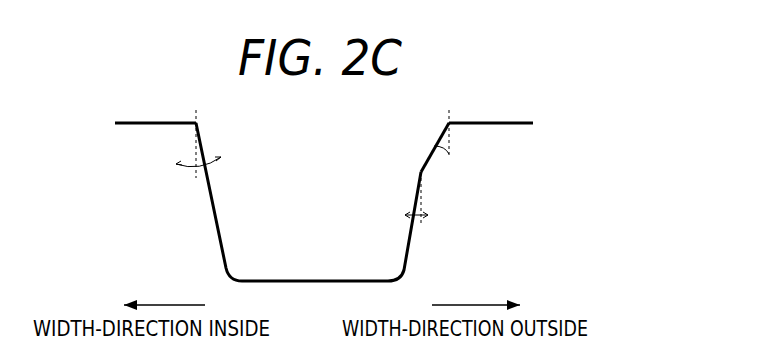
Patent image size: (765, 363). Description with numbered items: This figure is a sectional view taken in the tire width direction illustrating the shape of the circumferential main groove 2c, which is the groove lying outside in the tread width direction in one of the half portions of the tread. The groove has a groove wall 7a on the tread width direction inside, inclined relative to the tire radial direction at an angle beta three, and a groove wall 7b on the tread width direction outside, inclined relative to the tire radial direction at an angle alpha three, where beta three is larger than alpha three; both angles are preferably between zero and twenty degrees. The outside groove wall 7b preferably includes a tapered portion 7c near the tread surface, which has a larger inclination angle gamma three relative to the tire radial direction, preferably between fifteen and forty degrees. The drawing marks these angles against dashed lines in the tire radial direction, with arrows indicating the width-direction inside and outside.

The groove wall 7a is at (219, 236).
The groove wall 7b is at (409, 238).
The tapered portion 7c is at (437, 135).
The circumferential main groove 2c is at (332, 251).